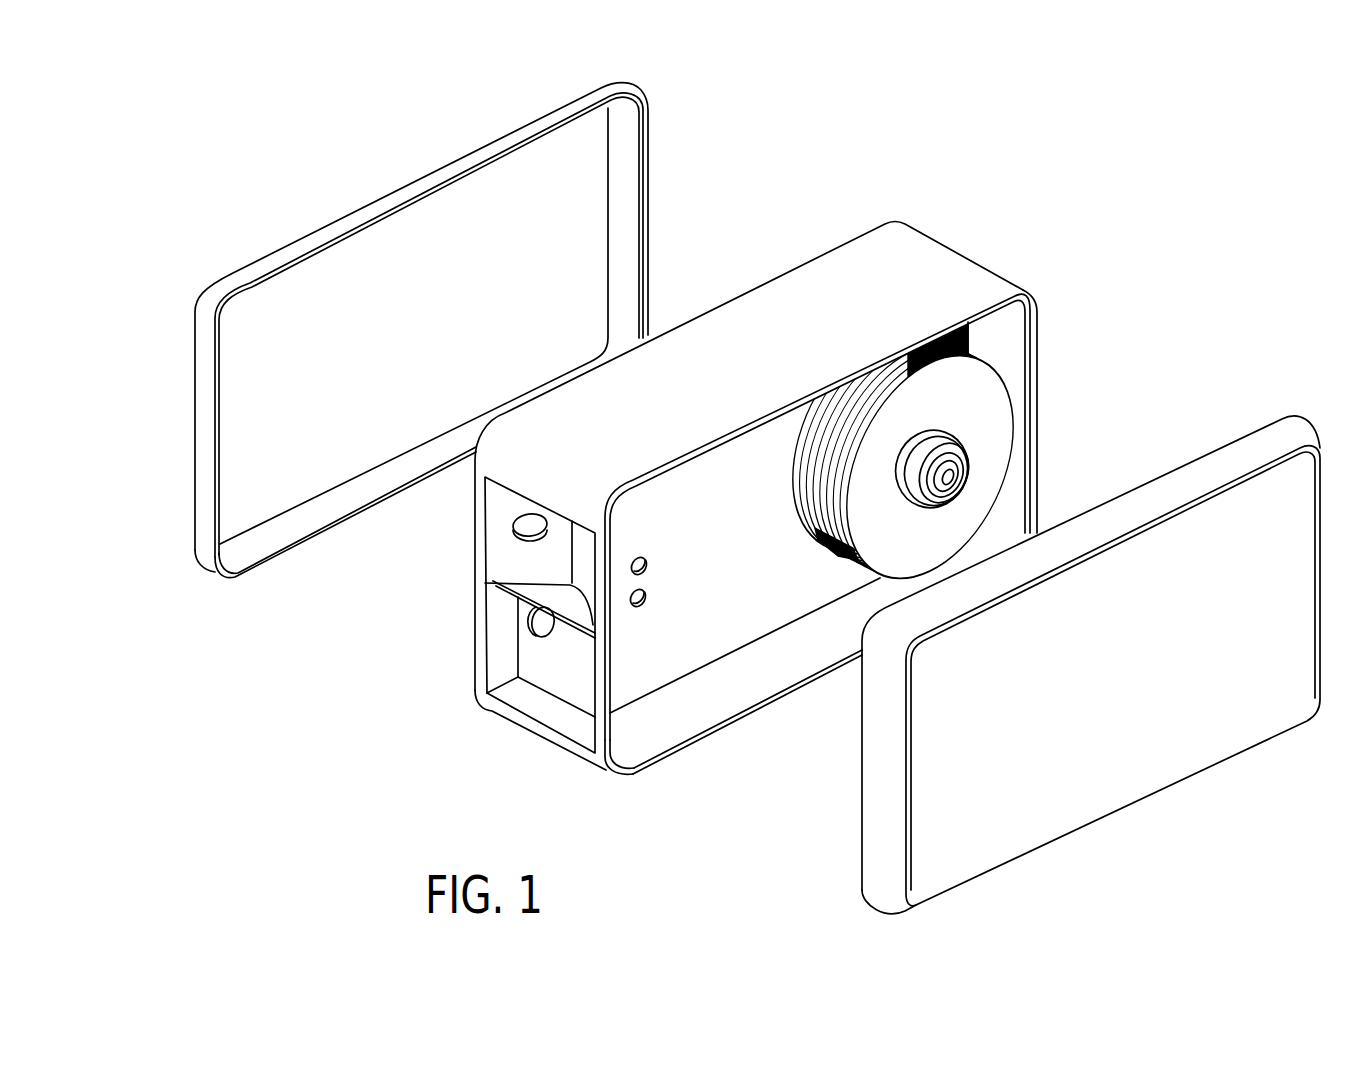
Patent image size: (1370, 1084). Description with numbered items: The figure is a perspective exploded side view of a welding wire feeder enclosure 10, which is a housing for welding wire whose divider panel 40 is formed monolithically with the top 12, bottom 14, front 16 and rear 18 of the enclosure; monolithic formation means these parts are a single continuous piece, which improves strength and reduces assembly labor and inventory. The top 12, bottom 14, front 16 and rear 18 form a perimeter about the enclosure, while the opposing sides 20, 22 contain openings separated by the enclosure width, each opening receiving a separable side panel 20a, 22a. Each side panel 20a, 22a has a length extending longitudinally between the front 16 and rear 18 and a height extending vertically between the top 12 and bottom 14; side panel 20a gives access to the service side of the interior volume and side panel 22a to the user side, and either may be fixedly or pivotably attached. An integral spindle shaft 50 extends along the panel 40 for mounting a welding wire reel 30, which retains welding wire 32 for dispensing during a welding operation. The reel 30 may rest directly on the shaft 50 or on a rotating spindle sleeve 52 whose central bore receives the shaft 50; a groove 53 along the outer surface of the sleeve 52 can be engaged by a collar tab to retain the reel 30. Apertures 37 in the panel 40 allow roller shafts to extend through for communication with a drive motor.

The enclosure 10 is at (742, 498).
The top 12 is at (750, 379).
The bottom 14 is at (640, 742).
The front 16 is at (497, 645).
The rear 18 is at (1040, 362).
The side 20 is at (476, 541).
The side panel 20a is at (242, 265).
The side 22 is at (793, 693).
The side panel 22a is at (990, 872).
The welding wire reel 30 is at (858, 566).
The welding wire 32 is at (810, 506).
The apertures 37 is at (634, 558).
The divider panel 40 is at (659, 582).
The spindle shaft 50 is at (981, 474).
The spindle sleeve 52 is at (922, 503).
The groove 53 is at (928, 431).